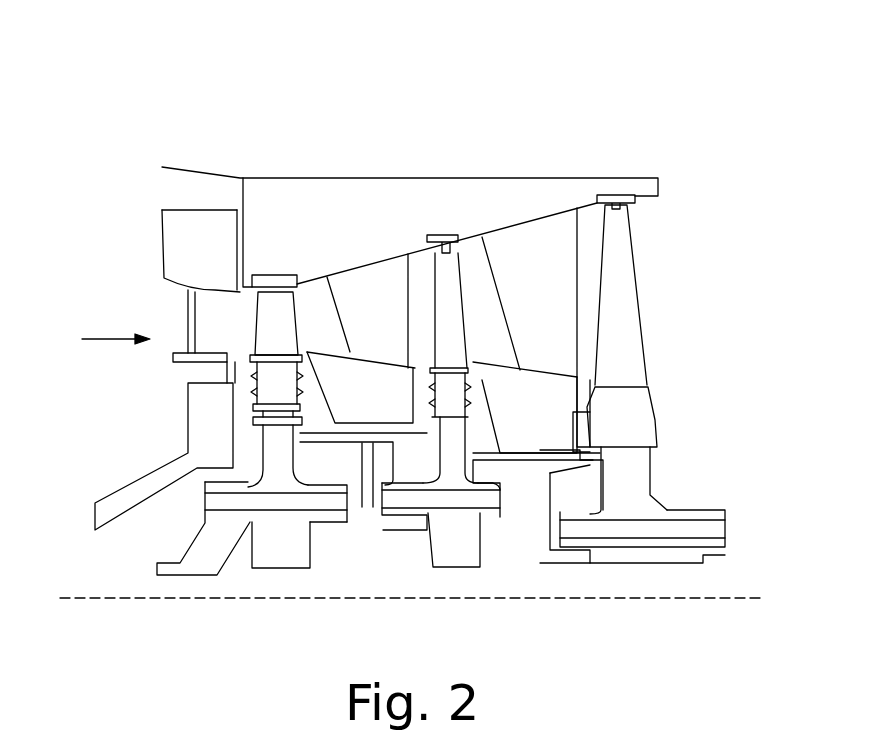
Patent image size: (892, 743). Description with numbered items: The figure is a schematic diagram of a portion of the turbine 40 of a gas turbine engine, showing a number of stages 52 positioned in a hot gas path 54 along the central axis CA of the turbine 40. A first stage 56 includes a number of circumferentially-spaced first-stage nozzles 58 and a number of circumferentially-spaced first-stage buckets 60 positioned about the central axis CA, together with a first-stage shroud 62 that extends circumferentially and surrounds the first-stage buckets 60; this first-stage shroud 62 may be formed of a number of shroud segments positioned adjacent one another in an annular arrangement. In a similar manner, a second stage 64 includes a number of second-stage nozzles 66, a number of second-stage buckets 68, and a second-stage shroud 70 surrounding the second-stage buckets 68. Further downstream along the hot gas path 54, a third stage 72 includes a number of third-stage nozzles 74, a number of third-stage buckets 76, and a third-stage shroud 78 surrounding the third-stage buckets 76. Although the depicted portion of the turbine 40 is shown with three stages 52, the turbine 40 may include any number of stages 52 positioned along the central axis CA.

The turbine 40 is at (106, 139).
The stages 52 is at (584, 188).
The hot gas path 54 is at (103, 338).
The first stage 56 is at (259, 232).
The first-stage nozzles 58 is at (202, 320).
The first-stage buckets 60 is at (313, 320).
The first-stage shroud 62 is at (273, 275).
The second stage 64 is at (418, 216).
The second-stage nozzles 66 is at (372, 293).
The second-stage buckets 68 is at (452, 313).
The second-stage shroud 70 is at (440, 234).
The third stage 72 is at (599, 352).
The third-stage nozzles 74 is at (555, 287).
The third-stage buckets 76 is at (628, 303).
The third-stage shroud 78 is at (624, 196).
The central axis CA is at (752, 596).